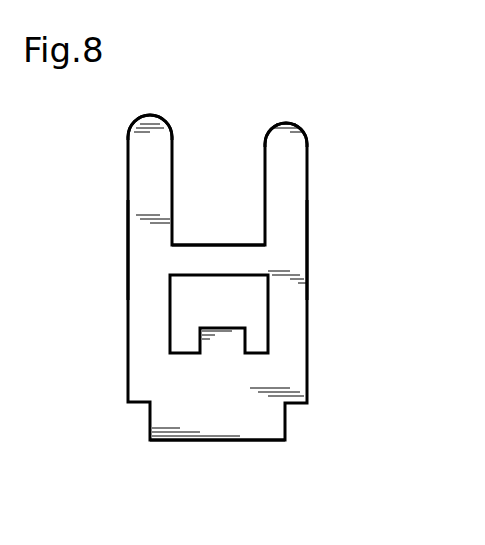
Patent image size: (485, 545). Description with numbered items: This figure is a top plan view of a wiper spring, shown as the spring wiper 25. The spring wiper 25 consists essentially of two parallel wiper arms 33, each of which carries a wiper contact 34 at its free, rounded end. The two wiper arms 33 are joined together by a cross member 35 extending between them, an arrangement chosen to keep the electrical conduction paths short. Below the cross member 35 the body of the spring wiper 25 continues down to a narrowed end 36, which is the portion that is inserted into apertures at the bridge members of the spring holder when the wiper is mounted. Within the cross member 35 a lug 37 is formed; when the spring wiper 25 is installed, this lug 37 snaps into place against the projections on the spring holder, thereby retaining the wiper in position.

The spring wiper 25 is at (126, 368).
The wiper arm 33 is at (138, 252).
The wiper contact 34 is at (132, 133).
The cross member 35 is at (215, 258).
The narrowed end 36 is at (190, 441).
The lug 37 is at (220, 331).